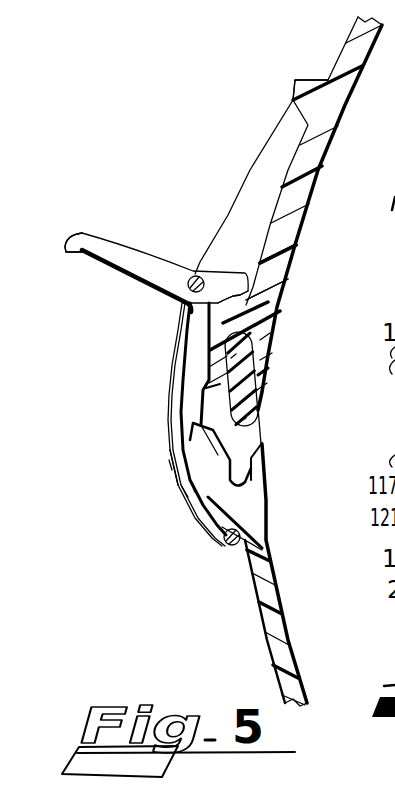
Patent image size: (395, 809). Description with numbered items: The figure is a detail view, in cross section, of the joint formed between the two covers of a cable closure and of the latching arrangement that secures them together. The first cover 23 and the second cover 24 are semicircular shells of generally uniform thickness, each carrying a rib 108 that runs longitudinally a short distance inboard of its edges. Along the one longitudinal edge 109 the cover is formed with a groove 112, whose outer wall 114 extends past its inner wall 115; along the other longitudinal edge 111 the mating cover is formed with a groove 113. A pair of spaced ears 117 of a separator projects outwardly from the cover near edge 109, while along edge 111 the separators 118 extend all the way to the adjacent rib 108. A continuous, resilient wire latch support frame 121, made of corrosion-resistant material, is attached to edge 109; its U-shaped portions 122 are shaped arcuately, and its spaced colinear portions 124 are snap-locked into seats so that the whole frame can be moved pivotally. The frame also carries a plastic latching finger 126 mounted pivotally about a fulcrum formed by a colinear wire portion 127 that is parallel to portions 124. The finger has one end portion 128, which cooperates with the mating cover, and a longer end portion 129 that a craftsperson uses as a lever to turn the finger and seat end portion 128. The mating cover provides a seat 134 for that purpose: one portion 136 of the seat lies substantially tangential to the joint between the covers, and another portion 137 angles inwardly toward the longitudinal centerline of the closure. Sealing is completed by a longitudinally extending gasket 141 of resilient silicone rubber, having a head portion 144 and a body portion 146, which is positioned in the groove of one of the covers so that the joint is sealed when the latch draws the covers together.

The first cover 23 is at (295, 230).
The second cover 24 is at (256, 652).
The rib 108 is at (294, 81).
The longitudinal edge 109 is at (190, 437).
The longitudinal edge 111 is at (168, 392).
The groove 112 is at (258, 454).
The groove 113 is at (245, 332).
The outer wall 114 is at (215, 447).
The inner wall 115 is at (293, 451).
The ear 117 is at (133, 465).
The separator 118 is at (257, 165).
The wire latch support frame 121 is at (160, 472).
The U-shaped portion 122 is at (188, 495).
The colinear wire portion 124 is at (224, 548).
The latching finger 126 is at (127, 248).
The colinear wire portion 127 is at (196, 275).
The end portion 128 is at (249, 289).
The end portion 129 is at (98, 255).
The seat 134 is at (275, 303).
The seat portion 136 is at (205, 331).
The seat portion 137 is at (287, 268).
The gasket 141 is at (257, 397).
The head portion 144 is at (234, 357).
The body portion 146 is at (252, 419).